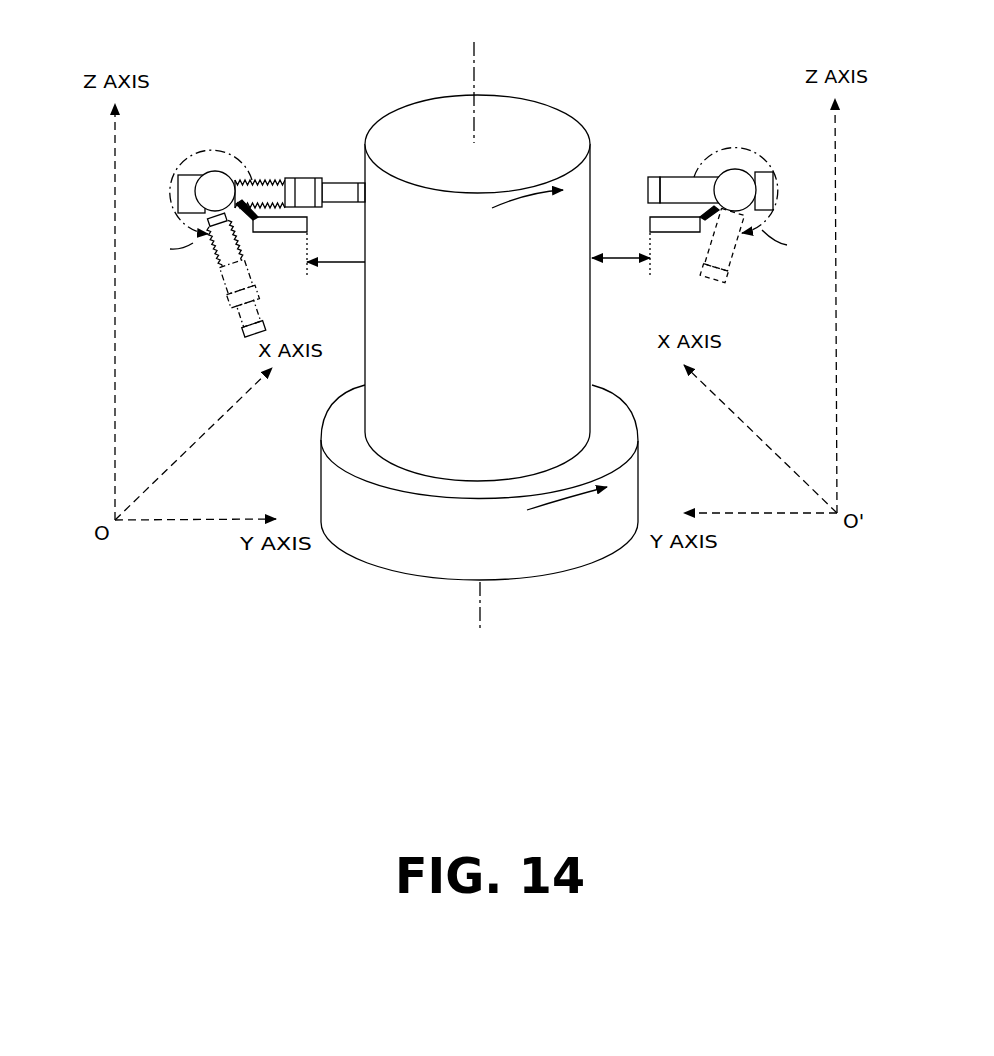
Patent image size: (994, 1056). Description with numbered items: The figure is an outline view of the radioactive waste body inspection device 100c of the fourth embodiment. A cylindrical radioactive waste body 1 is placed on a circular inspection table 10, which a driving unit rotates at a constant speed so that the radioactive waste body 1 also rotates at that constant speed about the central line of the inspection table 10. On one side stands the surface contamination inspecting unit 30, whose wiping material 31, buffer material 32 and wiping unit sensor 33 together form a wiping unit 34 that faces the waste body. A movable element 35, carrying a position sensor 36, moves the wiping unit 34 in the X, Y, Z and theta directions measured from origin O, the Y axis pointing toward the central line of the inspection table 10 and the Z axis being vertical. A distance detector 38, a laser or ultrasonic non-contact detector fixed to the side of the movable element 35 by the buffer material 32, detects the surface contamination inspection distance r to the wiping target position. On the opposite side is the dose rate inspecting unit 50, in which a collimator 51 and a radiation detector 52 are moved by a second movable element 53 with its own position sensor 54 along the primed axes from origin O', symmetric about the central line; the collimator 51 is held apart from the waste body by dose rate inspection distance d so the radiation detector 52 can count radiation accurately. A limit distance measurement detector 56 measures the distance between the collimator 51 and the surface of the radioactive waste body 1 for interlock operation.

The radioactive waste body 1 is at (514, 92).
The inspection table 10 is at (563, 571).
The surface contamination inspecting unit 30 is at (322, 67).
The wiping material 31 is at (360, 184).
The buffer material 32 is at (255, 179).
The wiping unit sensor 33 is at (300, 178).
The wiping unit 34 is at (365, 107).
The movable element 35 is at (217, 171).
The position sensor 36 is at (185, 177).
The distance detector 38 is at (278, 233).
The dose rate inspecting unit 50 is at (803, 101).
The collimator 51 is at (655, 177).
The radiation detector 52 is at (687, 177).
The movable element 53 is at (733, 169).
The position sensor 54 is at (765, 173).
The limit distance measurement detector 56 is at (676, 233).
The radioactive waste body inspection device 100c is at (507, 772).